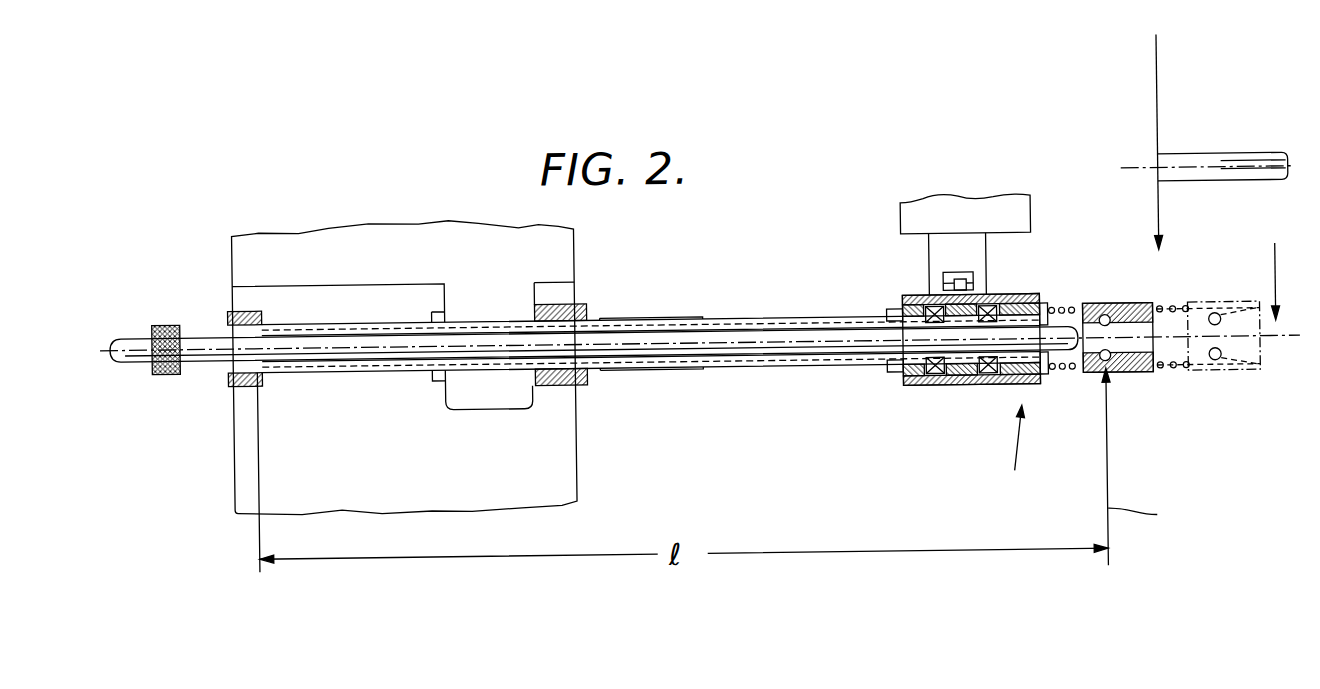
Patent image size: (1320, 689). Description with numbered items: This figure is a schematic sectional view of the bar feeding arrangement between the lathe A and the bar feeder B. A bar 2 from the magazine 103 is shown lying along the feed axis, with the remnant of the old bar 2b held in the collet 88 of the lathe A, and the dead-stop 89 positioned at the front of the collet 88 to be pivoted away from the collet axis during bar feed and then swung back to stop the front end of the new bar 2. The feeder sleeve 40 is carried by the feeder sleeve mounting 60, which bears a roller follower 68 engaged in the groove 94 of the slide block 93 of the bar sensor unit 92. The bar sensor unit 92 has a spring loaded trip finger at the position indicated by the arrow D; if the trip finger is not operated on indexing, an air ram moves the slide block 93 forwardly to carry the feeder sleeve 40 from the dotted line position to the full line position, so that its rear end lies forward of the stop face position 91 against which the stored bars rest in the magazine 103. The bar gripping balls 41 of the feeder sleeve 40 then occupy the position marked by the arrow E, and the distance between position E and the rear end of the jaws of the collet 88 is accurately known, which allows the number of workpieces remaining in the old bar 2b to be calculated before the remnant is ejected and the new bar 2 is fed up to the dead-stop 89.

The bar 2 is at (1226, 174).
The old bar 2b is at (653, 333).
The feeder sleeve 40 is at (1096, 308).
The bar gripping balls 41 is at (1112, 376).
The feeder sleeve mounting 60 is at (914, 391).
The roller follower 68 is at (973, 281).
The collet 88 is at (244, 319).
The dead-stop 89 is at (170, 366).
The stop face position 91 is at (1160, 101).
The bar sensor unit 92 is at (948, 226).
The slide block 93 is at (943, 251).
The groove 94 is at (944, 274).
The magazine 103 is at (1246, 147).
The lathe A is at (467, 430).
The bar feeder B is at (1018, 449).
The trip finger position D is at (1285, 281).
The forward ball position E is at (1142, 518).